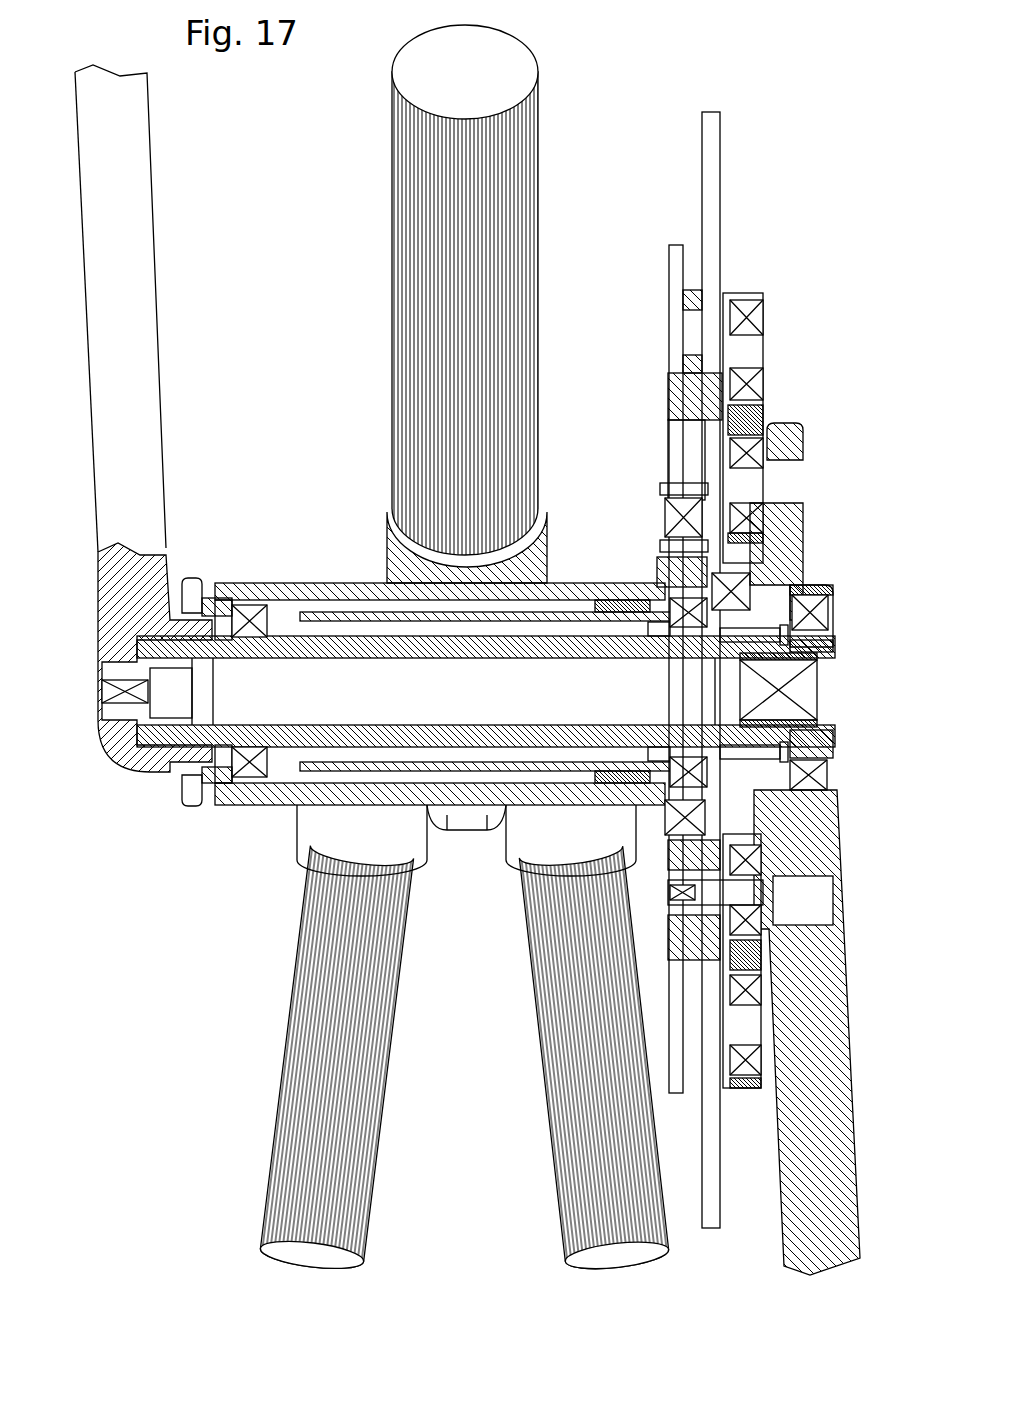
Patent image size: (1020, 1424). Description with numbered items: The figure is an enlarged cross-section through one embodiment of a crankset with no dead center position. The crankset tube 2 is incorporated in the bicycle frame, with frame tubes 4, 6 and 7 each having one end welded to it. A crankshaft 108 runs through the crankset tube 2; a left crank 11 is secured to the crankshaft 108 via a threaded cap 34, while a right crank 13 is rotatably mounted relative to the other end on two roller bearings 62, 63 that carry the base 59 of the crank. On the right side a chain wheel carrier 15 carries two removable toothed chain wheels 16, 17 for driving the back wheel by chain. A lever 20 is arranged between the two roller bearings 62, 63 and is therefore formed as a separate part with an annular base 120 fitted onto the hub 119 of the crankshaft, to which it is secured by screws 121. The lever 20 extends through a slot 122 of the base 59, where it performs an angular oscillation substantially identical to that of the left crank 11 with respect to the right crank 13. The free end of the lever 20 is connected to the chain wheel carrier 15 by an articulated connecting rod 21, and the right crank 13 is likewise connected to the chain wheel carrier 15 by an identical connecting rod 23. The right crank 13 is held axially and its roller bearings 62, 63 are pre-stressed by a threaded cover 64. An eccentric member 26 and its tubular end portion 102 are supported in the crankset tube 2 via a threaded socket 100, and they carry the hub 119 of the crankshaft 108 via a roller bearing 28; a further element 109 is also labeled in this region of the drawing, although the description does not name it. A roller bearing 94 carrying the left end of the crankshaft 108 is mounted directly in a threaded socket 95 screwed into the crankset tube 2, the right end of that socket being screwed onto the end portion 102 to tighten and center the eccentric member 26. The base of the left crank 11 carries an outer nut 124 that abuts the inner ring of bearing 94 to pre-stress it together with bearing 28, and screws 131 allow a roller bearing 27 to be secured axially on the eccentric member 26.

The crankset tube 2 is at (345, 585).
The tube 4 is at (410, 372).
The tube 6 is at (290, 1172).
The tube 7 is at (573, 1155).
The left crank 11 is at (112, 492).
The right crank 13 is at (835, 1148).
The chain wheel carrier 15 is at (672, 383).
The chain wheel 16 is at (676, 270).
The chain wheel 17 is at (712, 196).
The lever 20 is at (795, 548).
The connecting rod 21 is at (752, 415).
The connecting rod 23 is at (745, 950).
The eccentric member 26 is at (670, 540).
The roller bearing 27 is at (680, 500).
The roller bearing 28 is at (690, 770).
The threaded cap 34 is at (100, 680).
The base 59 is at (835, 600).
The roller bearing 62 is at (698, 630).
The roller bearing 63 is at (835, 628).
The threaded cover 64 is at (835, 653).
The roller bearing 94 is at (250, 763).
The threaded socket 95 is at (250, 600).
The threaded socket 100 is at (630, 600).
The tubular end portion 102 is at (578, 598).
The crankshaft 108 is at (484, 785).
The nut 109 is at (655, 648).
The hub 119 is at (662, 690).
The annular base 120 is at (835, 783).
The screws 121 is at (835, 728).
The slot 122 is at (810, 595).
The outer nut 124 is at (192, 572).
The screws 131 is at (690, 520).